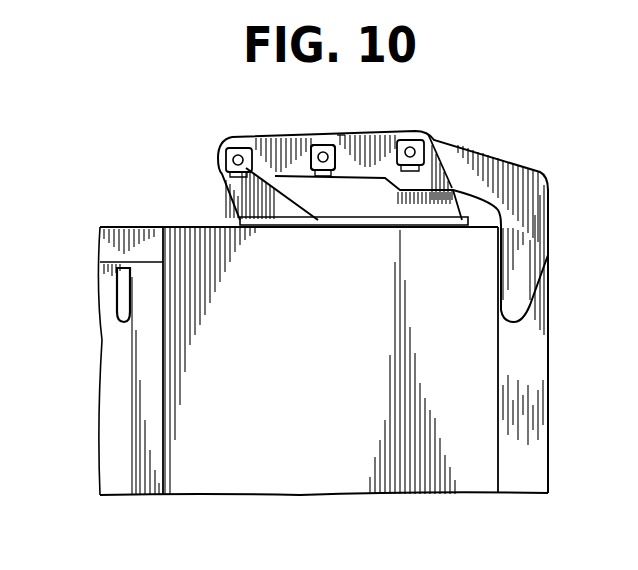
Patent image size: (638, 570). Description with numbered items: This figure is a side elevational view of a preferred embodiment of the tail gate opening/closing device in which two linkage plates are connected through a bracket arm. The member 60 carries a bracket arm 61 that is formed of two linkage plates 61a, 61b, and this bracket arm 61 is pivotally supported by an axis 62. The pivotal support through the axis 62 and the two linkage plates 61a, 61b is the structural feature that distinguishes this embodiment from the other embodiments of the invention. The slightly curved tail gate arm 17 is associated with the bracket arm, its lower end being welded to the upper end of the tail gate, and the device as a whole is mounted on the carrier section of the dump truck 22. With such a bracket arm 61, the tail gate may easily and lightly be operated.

The member 60 is at (430, 121).
The linkage plate 61a is at (278, 134).
The axis 62 is at (316, 133).
The bracket arm 61 is at (348, 133).
The linkage plate 61b is at (392, 132).
The tail gate arm 17 is at (540, 428).
The dump truck 22 is at (300, 484).